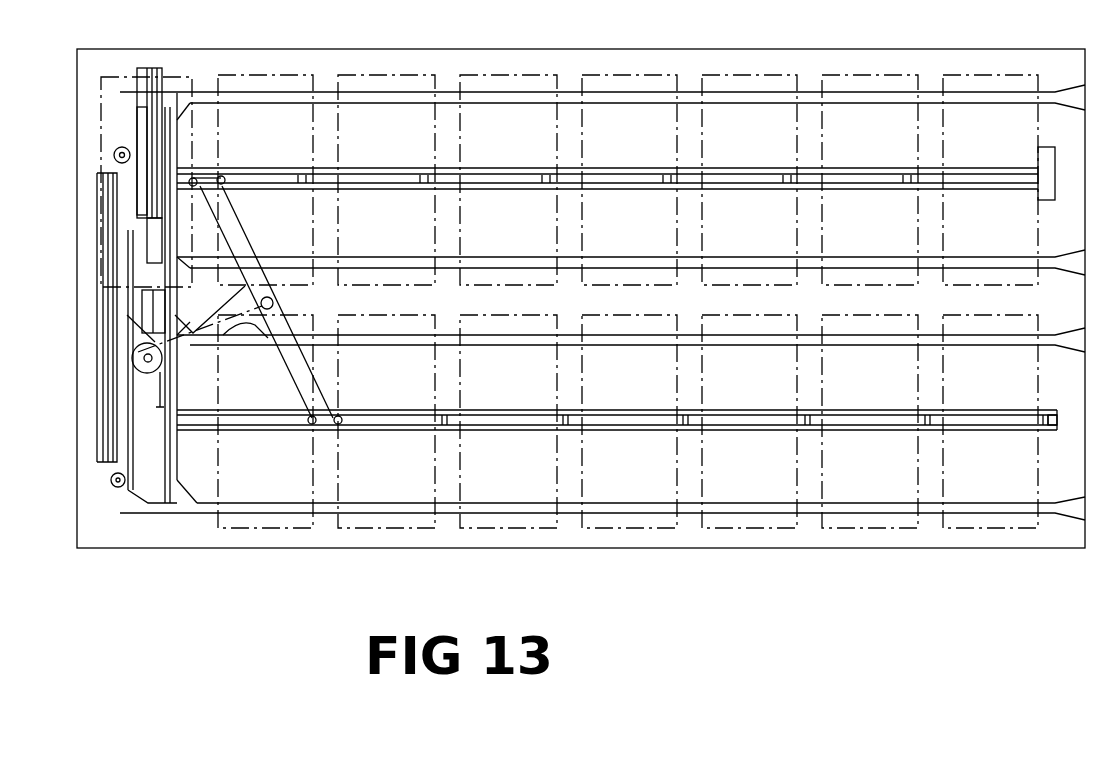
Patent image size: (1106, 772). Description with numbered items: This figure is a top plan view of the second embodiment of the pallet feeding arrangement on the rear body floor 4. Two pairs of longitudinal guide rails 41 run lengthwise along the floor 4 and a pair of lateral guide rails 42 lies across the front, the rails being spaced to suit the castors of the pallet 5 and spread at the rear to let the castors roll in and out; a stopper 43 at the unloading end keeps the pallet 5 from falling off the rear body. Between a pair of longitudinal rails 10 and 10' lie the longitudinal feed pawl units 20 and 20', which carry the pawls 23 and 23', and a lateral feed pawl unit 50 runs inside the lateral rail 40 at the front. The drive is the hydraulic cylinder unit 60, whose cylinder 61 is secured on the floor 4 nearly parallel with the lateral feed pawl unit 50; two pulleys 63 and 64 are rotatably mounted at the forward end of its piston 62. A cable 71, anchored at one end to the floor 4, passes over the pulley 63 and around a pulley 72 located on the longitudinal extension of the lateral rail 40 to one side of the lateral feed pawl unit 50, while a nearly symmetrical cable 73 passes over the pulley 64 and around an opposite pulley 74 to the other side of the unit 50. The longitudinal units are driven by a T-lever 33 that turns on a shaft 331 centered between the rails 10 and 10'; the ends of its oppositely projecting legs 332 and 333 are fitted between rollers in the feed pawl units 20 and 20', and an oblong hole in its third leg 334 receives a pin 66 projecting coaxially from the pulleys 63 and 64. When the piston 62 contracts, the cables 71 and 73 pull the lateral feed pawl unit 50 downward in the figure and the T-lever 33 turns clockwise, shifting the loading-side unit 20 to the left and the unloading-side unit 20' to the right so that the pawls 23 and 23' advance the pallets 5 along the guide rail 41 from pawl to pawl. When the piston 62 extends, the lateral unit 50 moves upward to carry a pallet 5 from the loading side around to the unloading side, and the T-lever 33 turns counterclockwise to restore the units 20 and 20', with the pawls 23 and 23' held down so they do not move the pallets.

The rear body floor 4 is at (870, 52).
The pallet 5 is at (278, 75).
The longitudinal rail 10 is at (617, 401).
The longitudinal rail 10' is at (607, 155).
The longitudinal feed pawl unit 20 is at (617, 448).
The longitudinal feed pawl unit 20' is at (607, 151).
The pawl 23 is at (538, 320).
The pawl 23' is at (573, 160).
The T-lever 33 is at (308, 252).
The shaft 331 is at (275, 303).
The leg 332 is at (235, 208).
The leg 333 is at (308, 370).
The leg 334 is at (198, 348).
The lateral rail 40 is at (105, 300).
The guide rail 41 is at (707, 108).
The guide rail 42 is at (127, 447).
The stopper 43 is at (1052, 158).
The lateral feed pawl unit 50 is at (105, 218).
The hydraulic cylinder unit 60 is at (143, 65).
The cylinder 61 is at (143, 120).
The piston 62 is at (143, 240).
The pulley 63 is at (136, 372).
The pulley 64 is at (93, 383).
The pin 66 is at (166, 382).
The cable 71 is at (105, 355).
The pulley 72 is at (116, 488).
The cable 73 is at (166, 300).
The pulley 74 is at (114, 151).